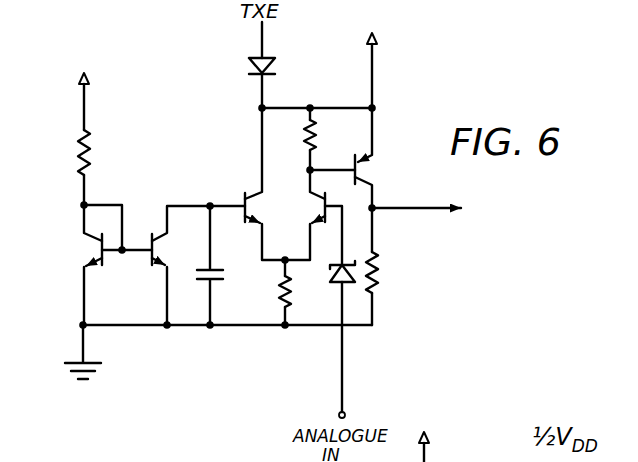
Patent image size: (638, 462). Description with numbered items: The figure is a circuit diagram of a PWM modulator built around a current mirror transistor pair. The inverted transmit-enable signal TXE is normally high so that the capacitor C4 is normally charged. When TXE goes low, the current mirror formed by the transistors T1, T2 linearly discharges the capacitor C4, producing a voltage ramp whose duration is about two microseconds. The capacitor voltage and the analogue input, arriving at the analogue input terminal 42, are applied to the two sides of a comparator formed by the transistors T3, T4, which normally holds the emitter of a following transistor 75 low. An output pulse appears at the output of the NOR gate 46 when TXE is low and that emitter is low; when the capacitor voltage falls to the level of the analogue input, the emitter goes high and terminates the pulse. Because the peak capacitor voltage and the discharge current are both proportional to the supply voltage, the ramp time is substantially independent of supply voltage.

The current mirror transistor T1 is at (92, 250).
The current mirror transistor T2 is at (158, 267).
The comparator transistor T3 is at (243, 183).
The comparator transistor T4 is at (319, 203).
The capacitor C4 is at (225, 265).
The transistor 75 is at (376, 165).
The analogue input terminal 42 is at (337, 414).
The NOR gate 46 is at (479, 210).